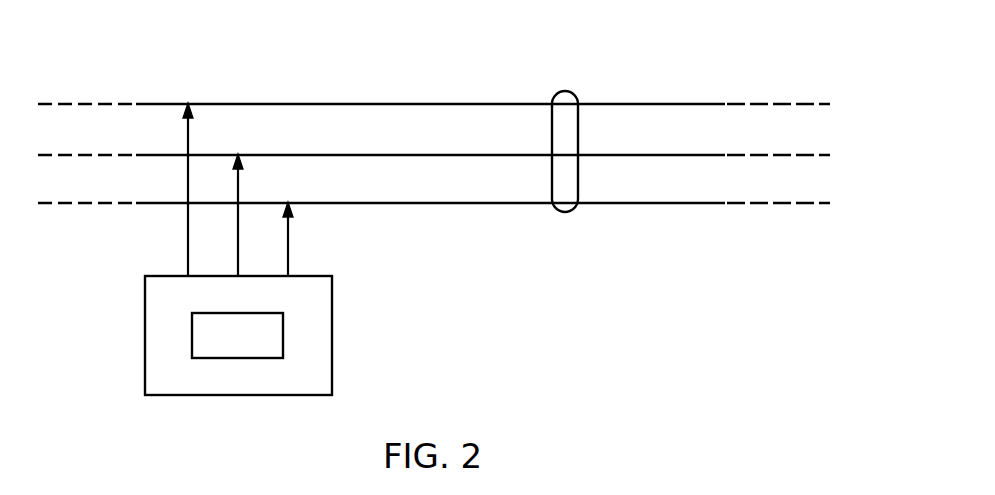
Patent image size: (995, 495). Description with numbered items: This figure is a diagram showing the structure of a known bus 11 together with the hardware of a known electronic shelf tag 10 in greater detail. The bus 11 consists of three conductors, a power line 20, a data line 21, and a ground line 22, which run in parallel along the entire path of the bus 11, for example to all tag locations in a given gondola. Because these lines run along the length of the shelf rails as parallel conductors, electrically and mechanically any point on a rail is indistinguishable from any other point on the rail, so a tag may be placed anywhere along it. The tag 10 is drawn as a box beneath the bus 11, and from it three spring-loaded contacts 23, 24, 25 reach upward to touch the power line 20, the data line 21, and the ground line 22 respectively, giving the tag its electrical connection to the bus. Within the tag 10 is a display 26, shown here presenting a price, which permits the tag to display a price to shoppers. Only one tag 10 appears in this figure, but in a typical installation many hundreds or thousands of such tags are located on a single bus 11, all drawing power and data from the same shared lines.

The tag 10 is at (332, 324).
The bus 11 is at (567, 213).
The power line 20 is at (672, 101).
The data line 21 is at (672, 152).
The ground line 22 is at (672, 200).
The spring-loaded contact 23 is at (188, 242).
The spring-loaded contact 24 is at (238, 229).
The spring-loaded contact 25 is at (289, 238).
The display 26 is at (232, 358).